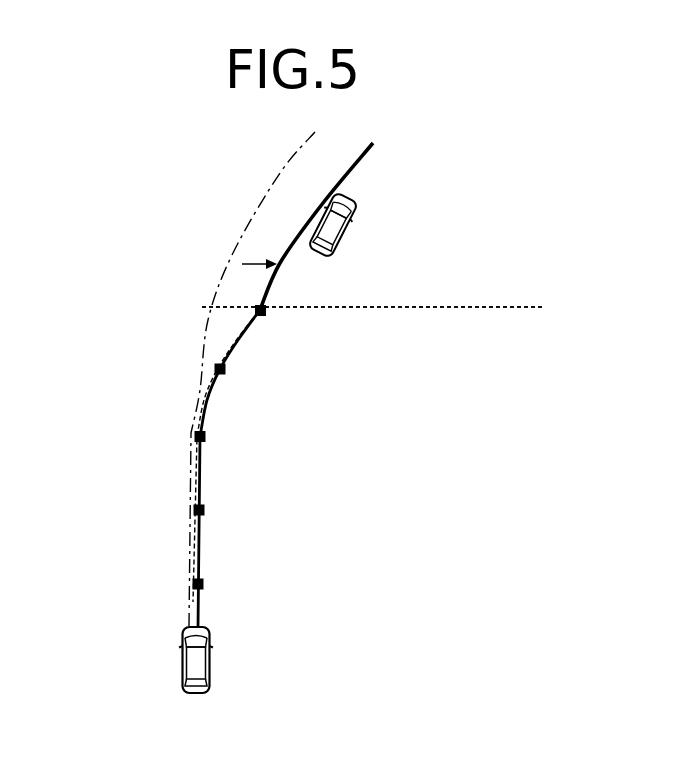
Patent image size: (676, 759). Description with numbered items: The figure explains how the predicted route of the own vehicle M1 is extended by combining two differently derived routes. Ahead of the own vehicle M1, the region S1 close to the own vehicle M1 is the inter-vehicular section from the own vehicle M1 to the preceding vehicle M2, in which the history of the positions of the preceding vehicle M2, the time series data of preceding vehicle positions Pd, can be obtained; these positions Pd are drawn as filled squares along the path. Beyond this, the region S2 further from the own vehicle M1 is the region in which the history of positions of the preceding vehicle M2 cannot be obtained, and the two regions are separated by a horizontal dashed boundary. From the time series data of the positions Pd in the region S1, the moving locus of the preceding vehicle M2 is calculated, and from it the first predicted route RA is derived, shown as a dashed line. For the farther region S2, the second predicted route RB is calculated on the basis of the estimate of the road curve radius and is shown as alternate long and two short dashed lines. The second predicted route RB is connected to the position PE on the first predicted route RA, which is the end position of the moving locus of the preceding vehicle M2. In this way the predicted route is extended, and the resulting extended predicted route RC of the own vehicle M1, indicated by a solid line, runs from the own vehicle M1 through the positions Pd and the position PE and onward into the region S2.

The second predicted route RB is at (280, 172).
The predicted route of the own vehicle RC is at (200, 548).
The first predicted route RA is at (195, 393).
The end position of the moving locus PE is at (266, 312).
The preceding vehicle position Pd is at (192, 510).
The region close to the own vehicle S1 is at (374, 325).
The region further from the own vehicle S2 is at (374, 290).
The own vehicle M1 is at (209, 658).
The preceding vehicle M2 is at (345, 230).